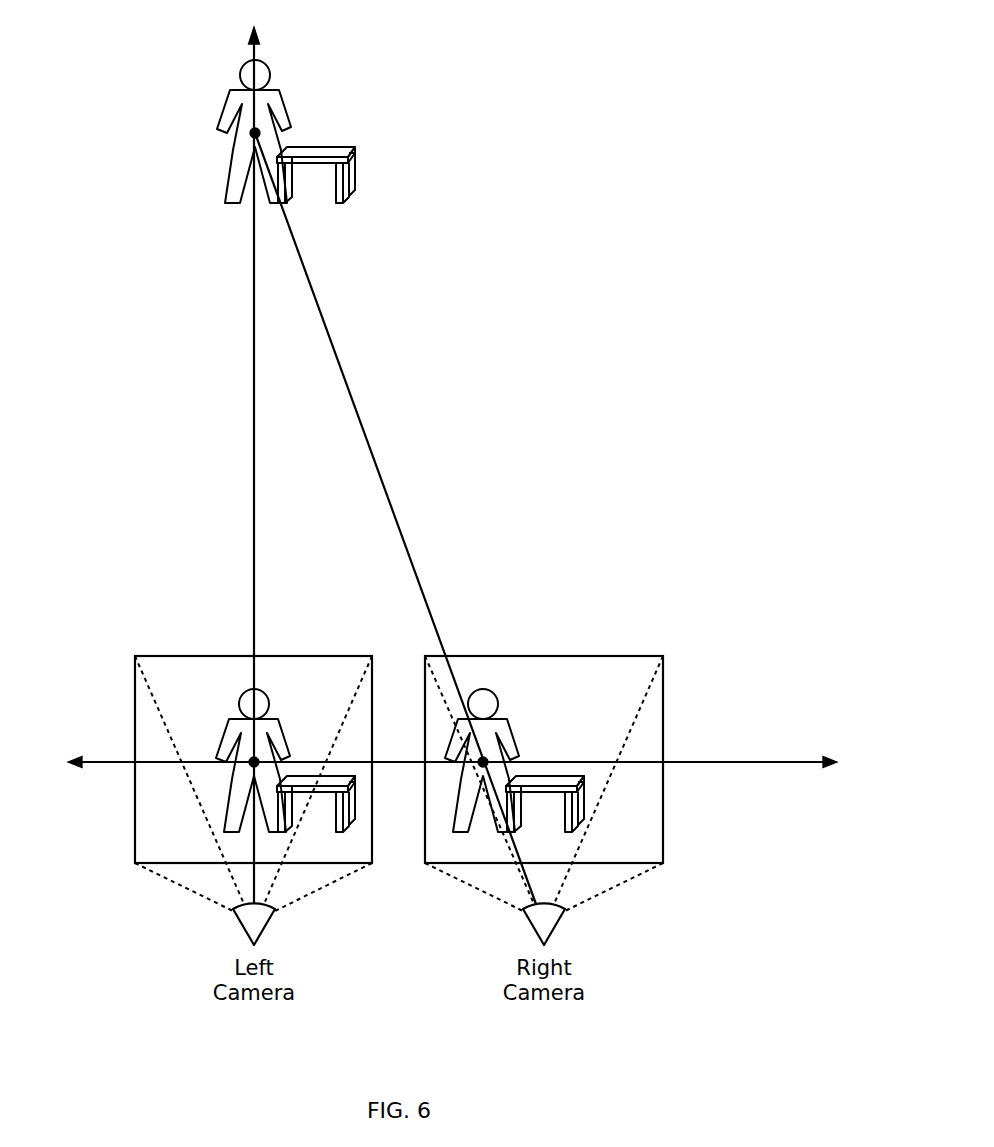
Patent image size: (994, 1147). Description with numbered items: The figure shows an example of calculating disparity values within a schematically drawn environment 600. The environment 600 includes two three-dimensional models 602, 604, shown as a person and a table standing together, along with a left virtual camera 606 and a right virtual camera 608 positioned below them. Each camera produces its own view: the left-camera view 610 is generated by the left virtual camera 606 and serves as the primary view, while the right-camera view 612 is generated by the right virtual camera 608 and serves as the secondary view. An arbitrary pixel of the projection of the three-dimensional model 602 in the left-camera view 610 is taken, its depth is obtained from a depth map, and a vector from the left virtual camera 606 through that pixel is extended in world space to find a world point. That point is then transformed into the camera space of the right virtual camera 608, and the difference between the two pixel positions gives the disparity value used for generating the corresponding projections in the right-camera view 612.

The environment 600 is at (679, 82).
The 3D model 602 is at (283, 84).
The 3D model 604 is at (323, 143).
The left virtual camera 606 is at (236, 920).
The right virtual camera 608 is at (526, 920).
The left-camera view 610 is at (253, 759).
The right-camera view 612 is at (544, 759).